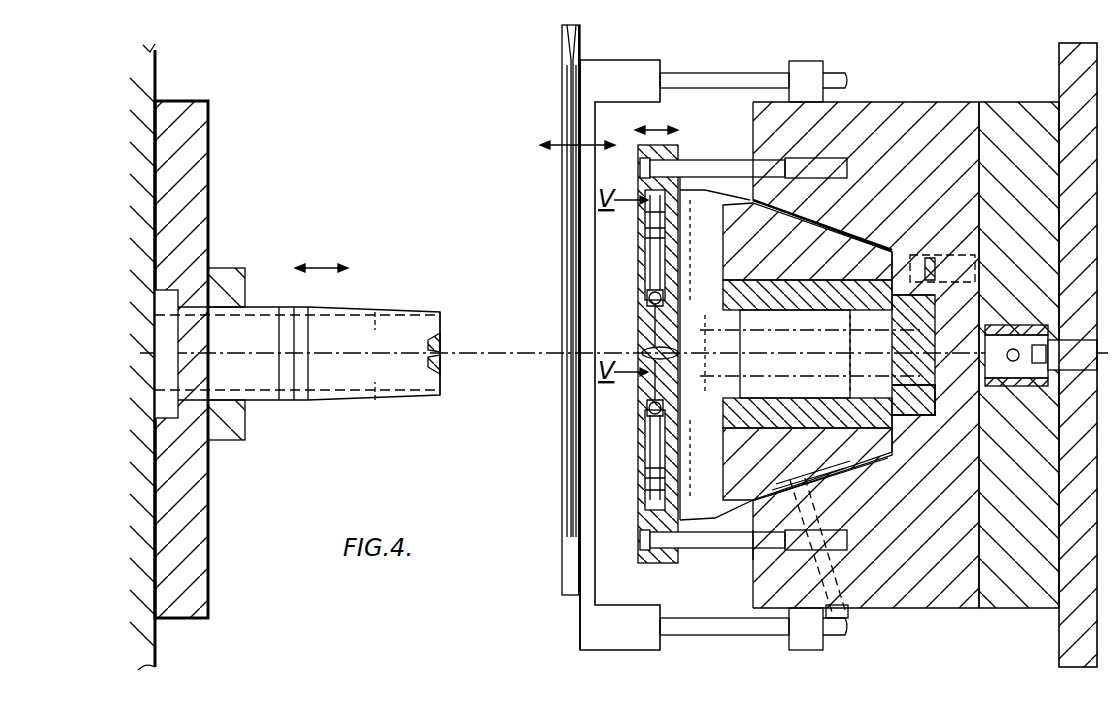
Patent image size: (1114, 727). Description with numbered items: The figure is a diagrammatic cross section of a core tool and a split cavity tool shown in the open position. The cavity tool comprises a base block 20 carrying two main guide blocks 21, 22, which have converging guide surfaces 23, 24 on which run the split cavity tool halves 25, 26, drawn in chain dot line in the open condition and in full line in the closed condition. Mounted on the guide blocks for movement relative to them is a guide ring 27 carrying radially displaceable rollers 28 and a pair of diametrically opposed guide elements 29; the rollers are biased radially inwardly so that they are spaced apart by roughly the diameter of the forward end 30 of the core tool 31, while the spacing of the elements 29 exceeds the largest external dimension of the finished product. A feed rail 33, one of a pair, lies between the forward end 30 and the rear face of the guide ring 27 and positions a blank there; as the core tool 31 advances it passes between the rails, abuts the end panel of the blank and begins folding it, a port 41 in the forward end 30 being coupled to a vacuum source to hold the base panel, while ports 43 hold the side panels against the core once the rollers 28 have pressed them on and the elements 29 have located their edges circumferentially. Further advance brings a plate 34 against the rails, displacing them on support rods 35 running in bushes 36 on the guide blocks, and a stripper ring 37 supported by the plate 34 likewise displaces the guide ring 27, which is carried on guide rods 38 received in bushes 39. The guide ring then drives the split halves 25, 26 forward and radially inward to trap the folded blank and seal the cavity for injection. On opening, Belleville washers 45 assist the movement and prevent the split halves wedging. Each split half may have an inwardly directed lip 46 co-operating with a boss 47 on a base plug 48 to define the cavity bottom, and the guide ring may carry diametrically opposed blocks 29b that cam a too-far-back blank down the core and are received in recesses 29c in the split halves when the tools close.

The base block 20 is at (1015, 585).
The main guide block 21 is at (893, 585).
The main guide block 22 is at (910, 120).
The converging guide surface 23 is at (868, 465).
The converging guide surface 24 is at (870, 252).
The split cavity tool half 25 is at (723, 468).
The split cavity tool half 26 is at (720, 285).
The guide ring 27 is at (679, 130).
The roller 28 is at (645, 297).
The guide element 29 is at (650, 350).
The block 29b is at (631, 404).
The recess 29c is at (810, 354).
The forward end 30 is at (440, 333).
The core tool 31 is at (405, 322).
The feed rail 33 is at (560, 195).
The plate 34 is at (195, 480).
The support rod 35 is at (745, 76).
The bush 36 is at (822, 72).
The stripper ring 37 is at (240, 425).
The guide rod 38 is at (712, 172).
The bush 39 is at (773, 548).
The port 41 is at (445, 355).
The port 43 is at (372, 355).
The Belleville washer 45 is at (945, 262).
The inwardly directed lip 46 is at (905, 425).
The boss 47 is at (893, 382).
The base plug 48 is at (895, 338).